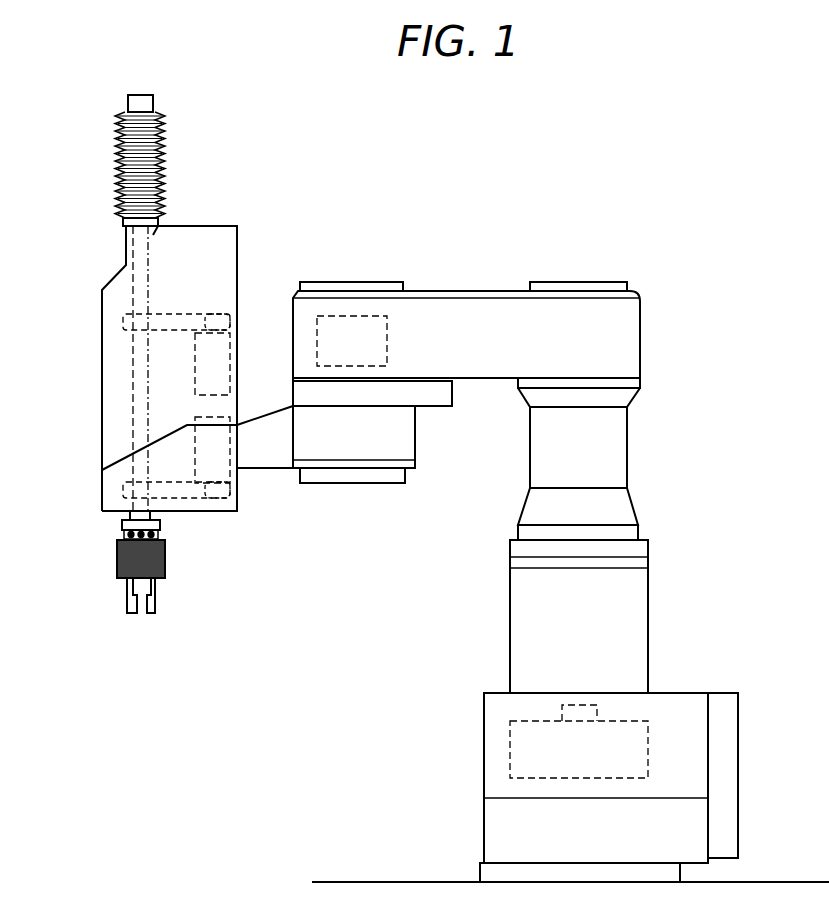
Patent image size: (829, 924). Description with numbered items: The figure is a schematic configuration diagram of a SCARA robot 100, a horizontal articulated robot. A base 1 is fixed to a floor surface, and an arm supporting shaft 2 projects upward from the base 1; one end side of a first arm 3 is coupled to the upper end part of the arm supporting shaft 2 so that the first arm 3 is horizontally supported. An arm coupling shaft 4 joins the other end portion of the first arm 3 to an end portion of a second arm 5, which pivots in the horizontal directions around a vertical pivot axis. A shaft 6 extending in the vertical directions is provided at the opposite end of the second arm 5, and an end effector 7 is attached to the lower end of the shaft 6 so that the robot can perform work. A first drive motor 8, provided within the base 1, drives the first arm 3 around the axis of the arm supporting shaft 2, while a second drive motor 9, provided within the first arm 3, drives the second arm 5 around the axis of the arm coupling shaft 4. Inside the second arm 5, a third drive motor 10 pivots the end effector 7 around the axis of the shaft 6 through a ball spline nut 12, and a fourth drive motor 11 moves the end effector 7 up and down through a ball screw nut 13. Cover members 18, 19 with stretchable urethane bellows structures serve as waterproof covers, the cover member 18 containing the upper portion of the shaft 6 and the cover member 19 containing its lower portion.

The SCARA robot 100 is at (703, 112).
The base 1 is at (493, 778).
The arm supporting shaft 2 is at (615, 452).
The first arm 3 is at (470, 302).
The arm coupling shaft 4 is at (330, 282).
The second arm 5 is at (278, 458).
The shaft 6 is at (128, 388).
The end effector 7 is at (128, 600).
The first drive motor 8 is at (510, 746).
The second drive motor 9 is at (368, 316).
The third drive motor 10 is at (230, 450).
The fourth drive motor 11 is at (237, 370).
The ball spline nut 12 is at (125, 480).
The ball screw nut 13 is at (125, 313).
The cover member 18 is at (118, 115).
The cover member 19 is at (118, 556).